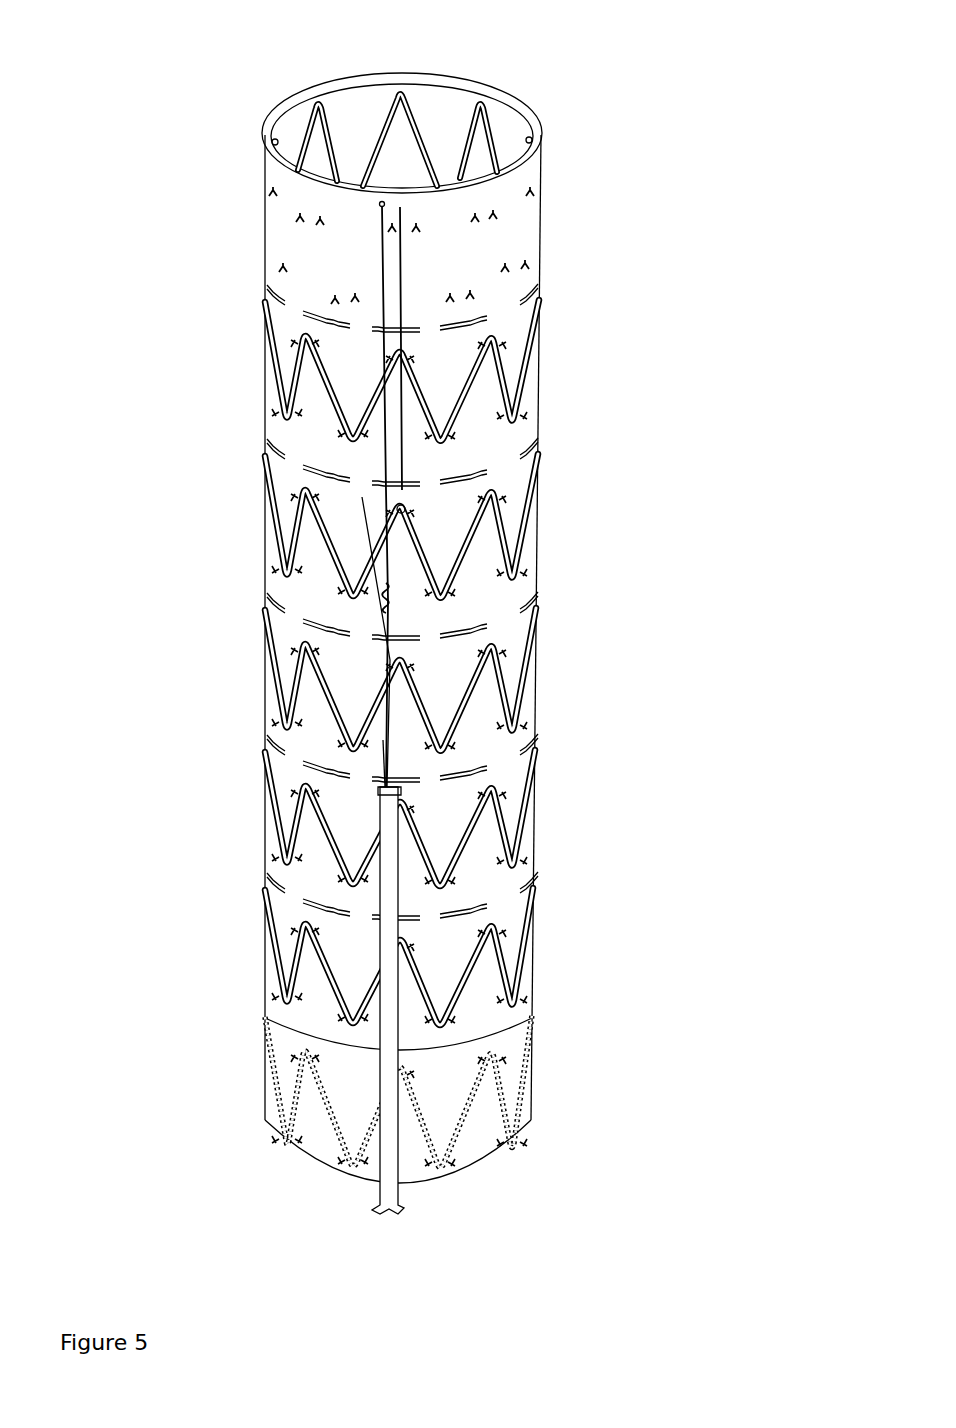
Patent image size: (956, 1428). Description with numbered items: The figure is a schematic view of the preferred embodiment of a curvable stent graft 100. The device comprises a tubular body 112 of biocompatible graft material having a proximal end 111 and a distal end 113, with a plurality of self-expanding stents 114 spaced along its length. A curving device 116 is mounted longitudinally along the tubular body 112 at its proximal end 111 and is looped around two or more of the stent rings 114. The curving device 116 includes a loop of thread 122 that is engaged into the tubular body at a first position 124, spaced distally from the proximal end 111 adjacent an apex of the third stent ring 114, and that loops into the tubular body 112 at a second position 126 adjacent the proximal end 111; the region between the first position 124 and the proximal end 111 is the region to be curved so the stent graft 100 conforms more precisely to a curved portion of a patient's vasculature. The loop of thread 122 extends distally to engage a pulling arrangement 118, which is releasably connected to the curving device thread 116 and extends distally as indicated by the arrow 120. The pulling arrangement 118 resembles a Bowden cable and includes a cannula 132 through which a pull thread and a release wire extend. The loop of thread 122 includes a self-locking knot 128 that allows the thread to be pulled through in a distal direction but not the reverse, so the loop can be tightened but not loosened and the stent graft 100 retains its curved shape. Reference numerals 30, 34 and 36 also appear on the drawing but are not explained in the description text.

The curvable stent graft 100 is at (551, 94).
The proximal end 111 is at (316, 86).
The distal end 113 is at (287, 1171).
The tubular body 112 is at (440, 610).
The self-expanding stents 114 is at (477, 543).
The curving device 116 is at (358, 451).
The pulling arrangement 118 is at (383, 762).
The arrow 120 is at (339, 1197).
The loop of thread 122 is at (378, 233).
The first position 124 is at (410, 508).
The second position 126 is at (392, 215).
The self-locking knot 128 is at (406, 604).
The cannula 132 is at (383, 897).
The suture 30 is at (366, 695).
The distal end of suture 34 is at (371, 792).
The proximal end of suture 36 is at (367, 548).